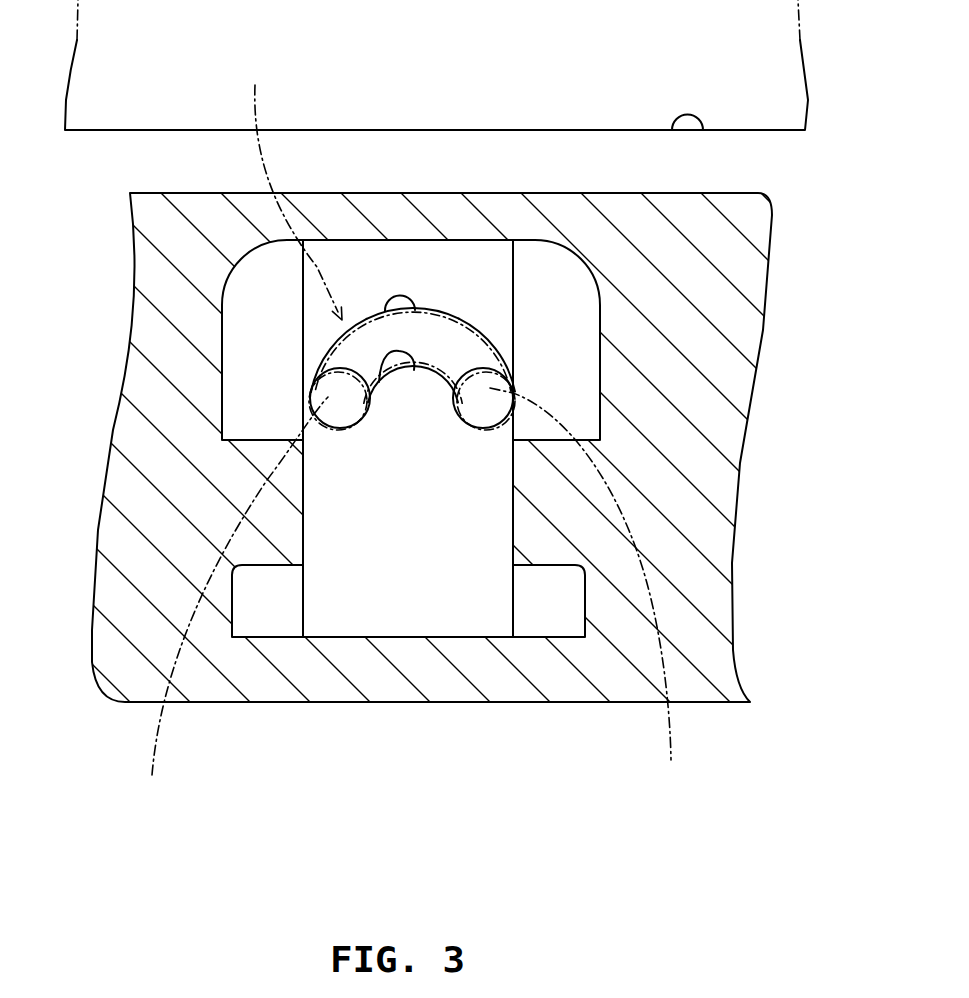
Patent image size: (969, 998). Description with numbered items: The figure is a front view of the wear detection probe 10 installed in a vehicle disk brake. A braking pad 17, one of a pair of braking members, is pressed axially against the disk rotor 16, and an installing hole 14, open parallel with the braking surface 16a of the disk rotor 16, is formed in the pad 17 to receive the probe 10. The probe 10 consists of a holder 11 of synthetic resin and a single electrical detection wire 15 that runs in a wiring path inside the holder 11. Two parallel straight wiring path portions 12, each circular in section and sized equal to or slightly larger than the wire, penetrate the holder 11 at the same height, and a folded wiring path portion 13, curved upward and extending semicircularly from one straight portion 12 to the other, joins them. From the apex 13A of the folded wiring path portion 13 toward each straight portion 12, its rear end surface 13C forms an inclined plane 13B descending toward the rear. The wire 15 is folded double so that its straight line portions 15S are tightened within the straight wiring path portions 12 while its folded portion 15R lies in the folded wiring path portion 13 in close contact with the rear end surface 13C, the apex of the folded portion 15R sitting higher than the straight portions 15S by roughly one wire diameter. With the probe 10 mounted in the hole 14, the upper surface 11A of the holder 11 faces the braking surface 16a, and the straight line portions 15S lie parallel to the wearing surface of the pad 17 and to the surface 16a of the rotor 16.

The wear detection probe 10 is at (682, 423).
The holder 11 is at (473, 590).
The upper surface of the holder 11A is at (387, 312).
The straight wiring path portion 12 is at (355, 417).
The folded wiring path portion 13 is at (435, 340).
The apex of the folded wiring path portion 13A is at (380, 383).
The inclined plane 13B is at (453, 352).
The rear end surface of the folded wiring path portion 13C is at (400, 343).
The installing hole 14 is at (240, 293).
The detection wire 15 is at (292, 185).
The folded portion of the detection wire 15R is at (437, 333).
The straight line portions of the detection wire 15S is at (417, 602).
The disk rotor 16 is at (752, 110).
The braking surface of the disk rotor 16a is at (703, 130).
The braking pad 17 is at (677, 528).